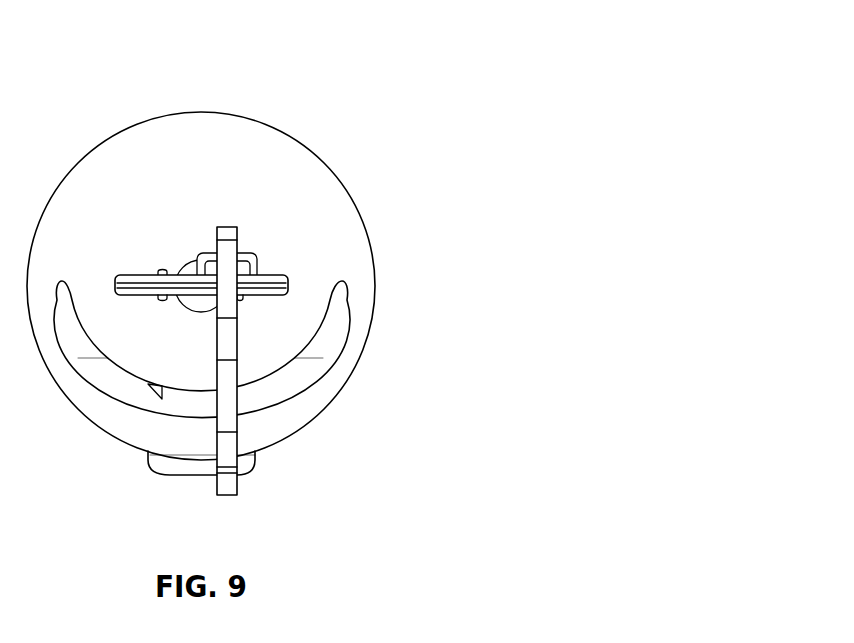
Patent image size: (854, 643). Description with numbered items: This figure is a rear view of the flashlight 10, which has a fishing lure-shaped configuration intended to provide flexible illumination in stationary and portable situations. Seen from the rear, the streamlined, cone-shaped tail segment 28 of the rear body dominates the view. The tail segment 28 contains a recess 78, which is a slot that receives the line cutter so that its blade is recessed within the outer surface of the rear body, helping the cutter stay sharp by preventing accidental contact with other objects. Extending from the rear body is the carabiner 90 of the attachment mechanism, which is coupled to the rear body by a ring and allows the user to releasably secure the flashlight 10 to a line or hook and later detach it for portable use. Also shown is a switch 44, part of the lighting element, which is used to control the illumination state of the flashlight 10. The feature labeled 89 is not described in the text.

The flashlight 10 is at (236, 282).
The tail segment 28 is at (292, 152).
The switch 44 is at (170, 463).
The recess 78 is at (334, 336).
The tab 89 is at (150, 390).
The carabiner 90 is at (228, 482).